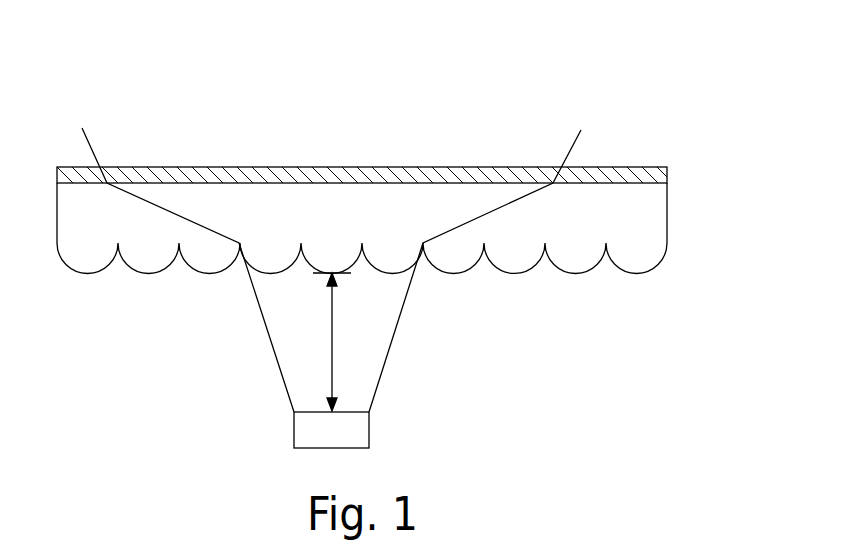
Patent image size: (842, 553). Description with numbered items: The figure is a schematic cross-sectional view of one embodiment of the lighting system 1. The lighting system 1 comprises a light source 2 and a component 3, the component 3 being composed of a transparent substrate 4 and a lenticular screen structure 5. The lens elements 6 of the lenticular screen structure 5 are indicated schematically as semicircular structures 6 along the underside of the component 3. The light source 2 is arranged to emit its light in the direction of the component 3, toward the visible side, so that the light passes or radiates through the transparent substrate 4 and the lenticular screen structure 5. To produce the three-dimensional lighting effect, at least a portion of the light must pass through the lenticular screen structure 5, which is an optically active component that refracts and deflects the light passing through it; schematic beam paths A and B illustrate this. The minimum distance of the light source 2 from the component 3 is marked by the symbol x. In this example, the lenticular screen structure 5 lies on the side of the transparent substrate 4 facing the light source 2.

The lighting system 1 is at (488, 93).
The light source 2 is at (369, 432).
The component 3 is at (678, 167).
The transparent substrate 4 is at (647, 166).
The lenticular screen structure 5 is at (341, 226).
The lens elements 6 is at (640, 254).